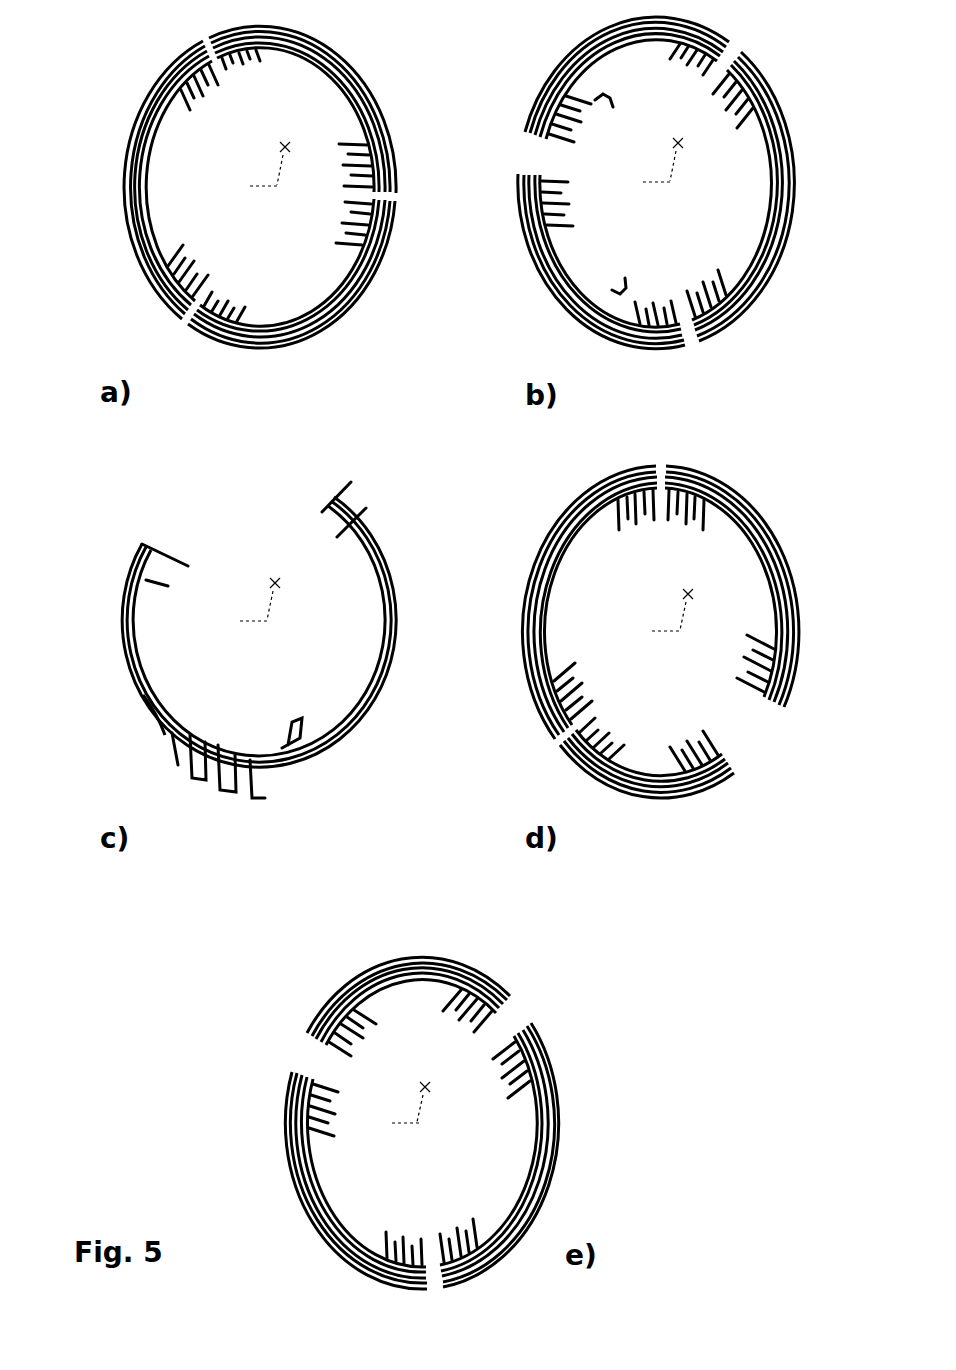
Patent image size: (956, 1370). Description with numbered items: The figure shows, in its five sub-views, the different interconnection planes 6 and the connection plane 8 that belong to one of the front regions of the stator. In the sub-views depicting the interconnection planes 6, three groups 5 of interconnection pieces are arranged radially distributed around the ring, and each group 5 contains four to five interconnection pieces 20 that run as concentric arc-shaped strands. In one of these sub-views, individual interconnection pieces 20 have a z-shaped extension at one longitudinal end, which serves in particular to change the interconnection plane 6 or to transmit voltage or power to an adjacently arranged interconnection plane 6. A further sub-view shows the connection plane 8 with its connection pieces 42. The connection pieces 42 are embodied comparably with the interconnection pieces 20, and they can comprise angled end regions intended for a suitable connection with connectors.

The group of interconnection pieces 5 is at (350, 52).
The interconnection plane 6 is at (113, 41).
The interconnection piece 20 is at (392, 165).
The connection plane 8 is at (70, 538).
The connection piece 42 is at (135, 700).